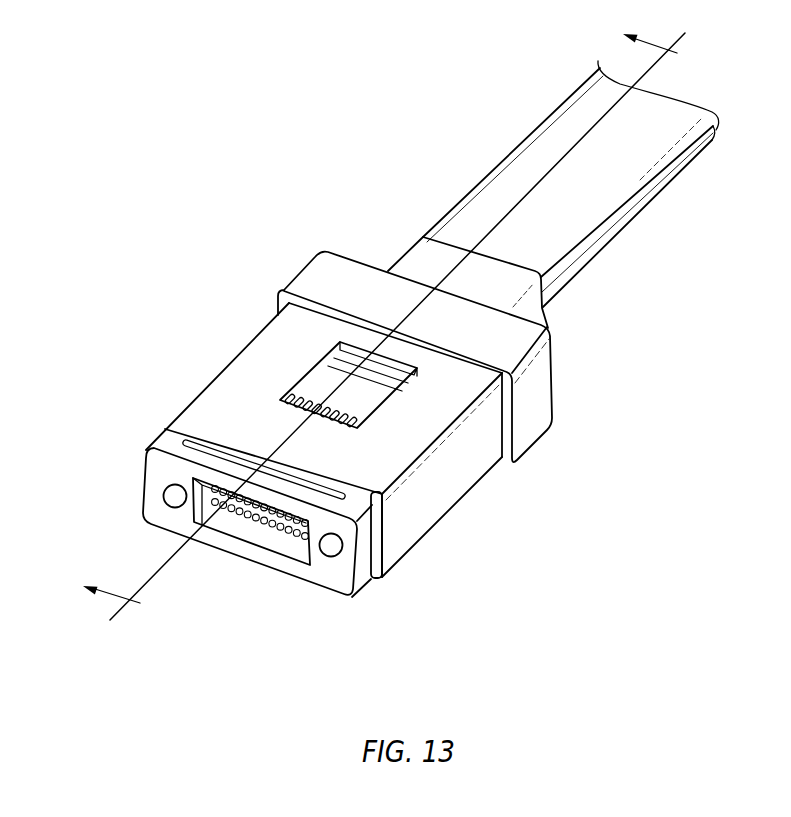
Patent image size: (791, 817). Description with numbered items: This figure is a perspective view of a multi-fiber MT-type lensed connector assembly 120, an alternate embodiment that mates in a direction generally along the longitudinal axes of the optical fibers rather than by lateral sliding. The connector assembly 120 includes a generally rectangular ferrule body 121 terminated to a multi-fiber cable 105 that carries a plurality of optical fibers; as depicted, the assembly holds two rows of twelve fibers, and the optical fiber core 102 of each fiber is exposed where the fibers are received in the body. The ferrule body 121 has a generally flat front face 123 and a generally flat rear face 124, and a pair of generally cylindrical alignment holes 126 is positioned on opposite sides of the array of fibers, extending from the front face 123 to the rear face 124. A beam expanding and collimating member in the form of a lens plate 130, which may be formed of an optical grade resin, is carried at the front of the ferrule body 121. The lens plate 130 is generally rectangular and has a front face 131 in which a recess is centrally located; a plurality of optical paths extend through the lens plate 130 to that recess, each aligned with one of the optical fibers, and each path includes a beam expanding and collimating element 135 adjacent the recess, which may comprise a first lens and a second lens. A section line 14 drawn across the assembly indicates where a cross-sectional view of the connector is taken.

The section line 14- 14 is at (397, 334).
The connector assembly 120 is at (256, 210).
The multi-fiber cable 105 is at (643, 207).
The optical fiber core 102 is at (307, 393).
The ferrule body 121 is at (456, 480).
The rear face 124 is at (552, 391).
The front face 123 is at (370, 557).
The alignment holes 126 is at (165, 487).
The lens plate 130 is at (168, 445).
The front face 131 is at (176, 521).
The beam expanding and collimating element 135 is at (215, 506).